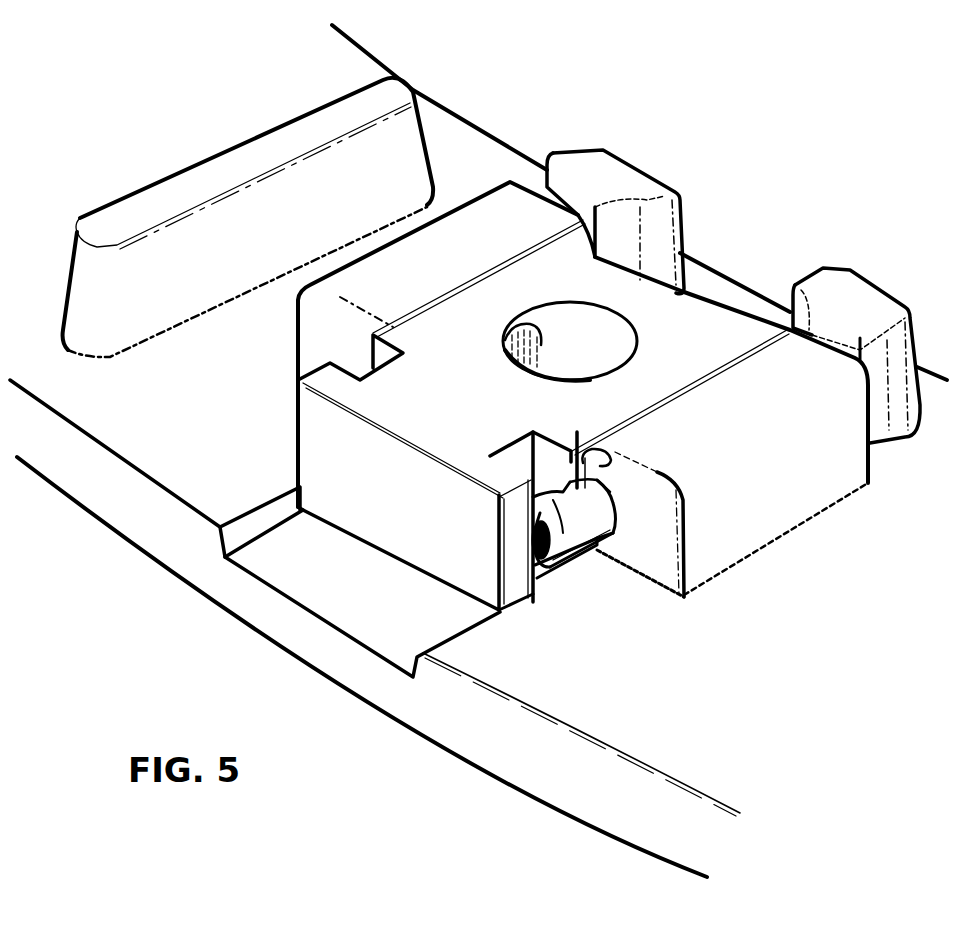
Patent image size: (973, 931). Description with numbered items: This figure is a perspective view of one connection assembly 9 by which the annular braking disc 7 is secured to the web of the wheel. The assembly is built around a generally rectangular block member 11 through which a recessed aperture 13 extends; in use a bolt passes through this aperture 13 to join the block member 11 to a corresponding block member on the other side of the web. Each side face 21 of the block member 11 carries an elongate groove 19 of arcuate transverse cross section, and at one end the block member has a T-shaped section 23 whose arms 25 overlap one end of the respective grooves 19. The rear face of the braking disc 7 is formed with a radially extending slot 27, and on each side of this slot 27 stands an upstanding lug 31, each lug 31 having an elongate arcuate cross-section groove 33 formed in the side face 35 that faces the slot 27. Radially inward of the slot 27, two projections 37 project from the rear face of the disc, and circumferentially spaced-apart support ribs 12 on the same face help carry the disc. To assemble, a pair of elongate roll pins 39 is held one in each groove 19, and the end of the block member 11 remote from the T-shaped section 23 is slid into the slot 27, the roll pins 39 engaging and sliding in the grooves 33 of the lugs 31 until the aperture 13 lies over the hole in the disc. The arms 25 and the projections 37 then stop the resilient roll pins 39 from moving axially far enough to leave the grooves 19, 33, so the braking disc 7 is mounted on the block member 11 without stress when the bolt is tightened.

The braking disc 7 is at (547, 695).
The connection assembly 9 is at (520, 127).
The block member 11 is at (643, 380).
The support rib 12 is at (227, 167).
The recessed aperture 13 is at (507, 327).
The elongate groove 19 is at (603, 497).
The side face 21 is at (596, 462).
The T-shaped section 23 is at (408, 503).
The arms 25 is at (320, 383).
The radially extending slot 27 is at (302, 587).
The upstanding lug 31 is at (357, 293).
The arcuate cross-section groove 33 is at (613, 527).
The side face 35 is at (577, 432).
The projection 37 is at (623, 177).
The roll pin 39 is at (550, 577).